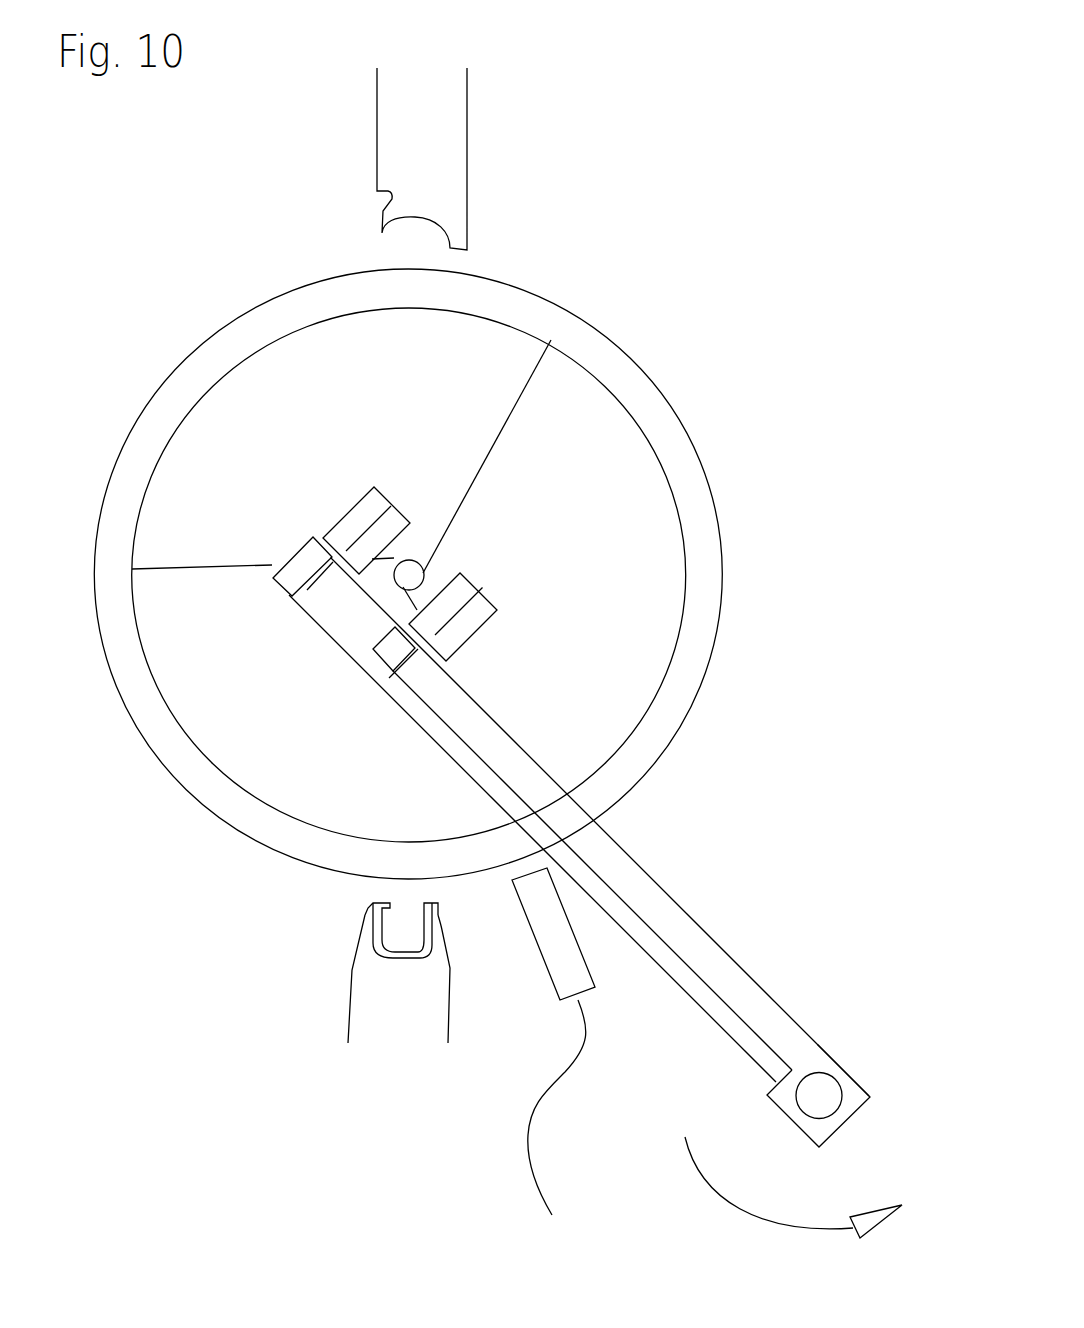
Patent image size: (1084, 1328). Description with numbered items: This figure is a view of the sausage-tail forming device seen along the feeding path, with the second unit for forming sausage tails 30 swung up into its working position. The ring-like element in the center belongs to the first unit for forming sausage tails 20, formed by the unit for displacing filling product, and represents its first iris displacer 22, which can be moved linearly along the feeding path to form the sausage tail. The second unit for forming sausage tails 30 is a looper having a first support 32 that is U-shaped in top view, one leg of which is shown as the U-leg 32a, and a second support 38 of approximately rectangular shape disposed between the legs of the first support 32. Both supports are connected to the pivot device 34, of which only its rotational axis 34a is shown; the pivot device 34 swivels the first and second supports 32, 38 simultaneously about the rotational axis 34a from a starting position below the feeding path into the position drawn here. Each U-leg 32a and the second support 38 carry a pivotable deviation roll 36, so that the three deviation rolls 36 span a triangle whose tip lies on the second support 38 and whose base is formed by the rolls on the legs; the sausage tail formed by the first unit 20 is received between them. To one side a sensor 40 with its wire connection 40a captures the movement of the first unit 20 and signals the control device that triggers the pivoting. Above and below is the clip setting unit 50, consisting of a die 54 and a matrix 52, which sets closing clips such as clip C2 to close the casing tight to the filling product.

The first unit for forming sausage tails 20 is at (766, 158).
The first iris displacer 22 is at (627, 352).
The second unit for forming sausage tails 30 is at (884, 728).
The first support 32 is at (803, 1043).
The U-leg of the first support 32a is at (416, 683).
The pivot device 34 is at (837, 1122).
The rotational axis 34a is at (820, 1095).
The deviation roll 36 is at (467, 585).
The second support 38 is at (313, 597).
The sensor 40 is at (537, 932).
The wire connection 40a is at (542, 1097).
The clip setting unit 50 is at (651, 63).
The matrix 52 is at (402, 1000).
The die 54 is at (425, 93).
The clip C2 is at (433, 918).